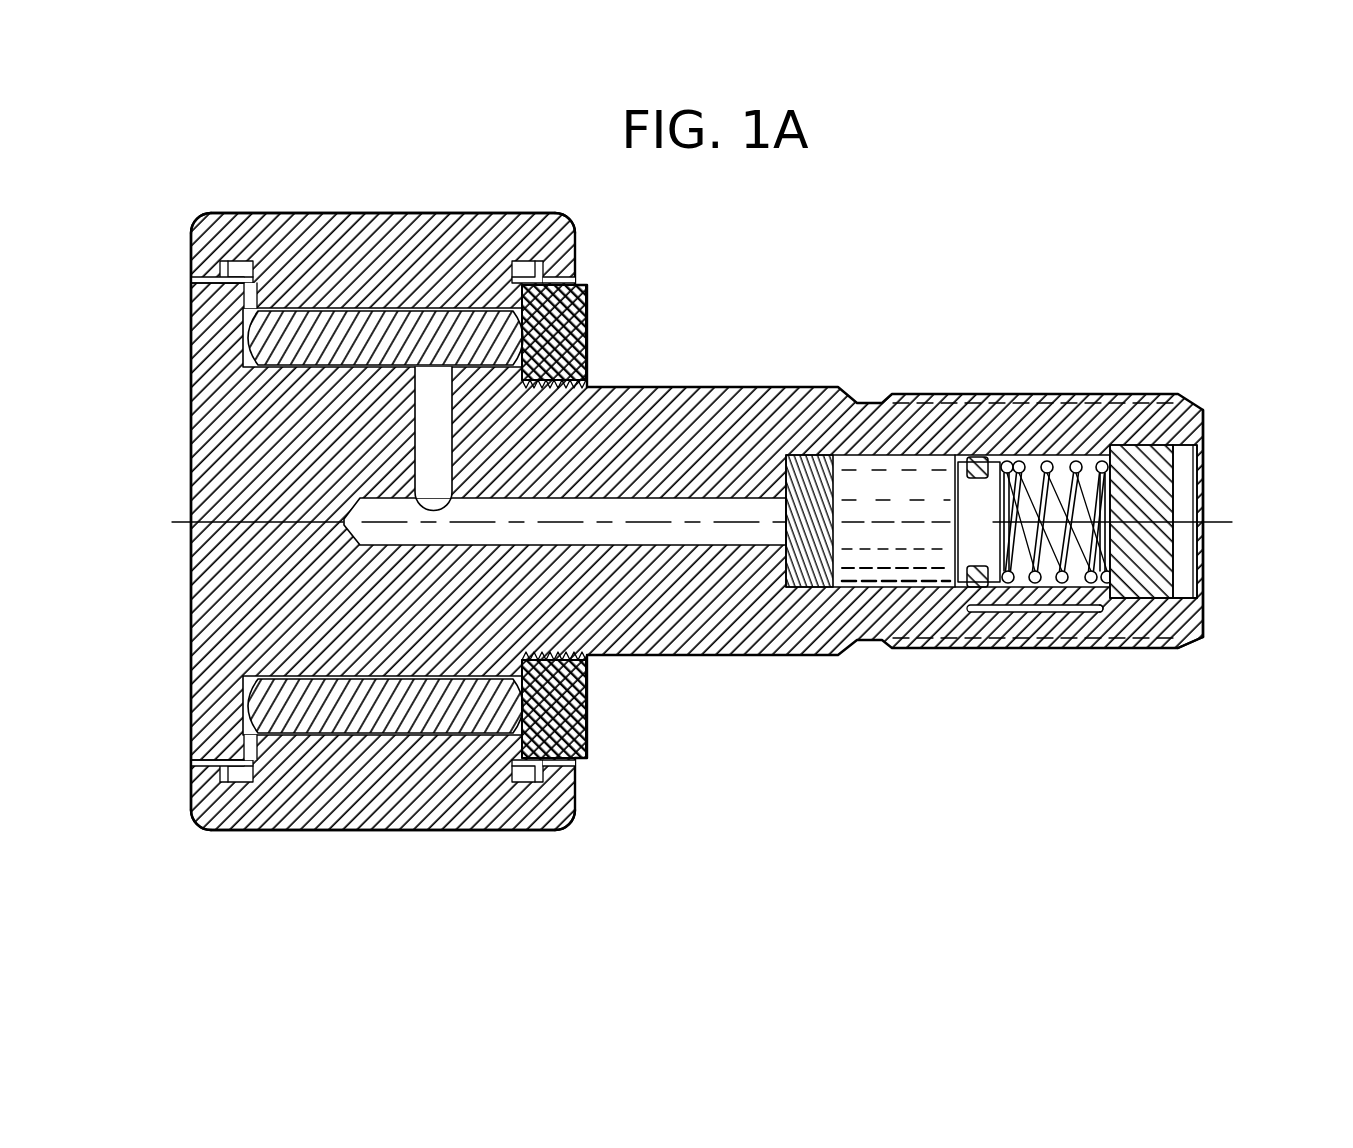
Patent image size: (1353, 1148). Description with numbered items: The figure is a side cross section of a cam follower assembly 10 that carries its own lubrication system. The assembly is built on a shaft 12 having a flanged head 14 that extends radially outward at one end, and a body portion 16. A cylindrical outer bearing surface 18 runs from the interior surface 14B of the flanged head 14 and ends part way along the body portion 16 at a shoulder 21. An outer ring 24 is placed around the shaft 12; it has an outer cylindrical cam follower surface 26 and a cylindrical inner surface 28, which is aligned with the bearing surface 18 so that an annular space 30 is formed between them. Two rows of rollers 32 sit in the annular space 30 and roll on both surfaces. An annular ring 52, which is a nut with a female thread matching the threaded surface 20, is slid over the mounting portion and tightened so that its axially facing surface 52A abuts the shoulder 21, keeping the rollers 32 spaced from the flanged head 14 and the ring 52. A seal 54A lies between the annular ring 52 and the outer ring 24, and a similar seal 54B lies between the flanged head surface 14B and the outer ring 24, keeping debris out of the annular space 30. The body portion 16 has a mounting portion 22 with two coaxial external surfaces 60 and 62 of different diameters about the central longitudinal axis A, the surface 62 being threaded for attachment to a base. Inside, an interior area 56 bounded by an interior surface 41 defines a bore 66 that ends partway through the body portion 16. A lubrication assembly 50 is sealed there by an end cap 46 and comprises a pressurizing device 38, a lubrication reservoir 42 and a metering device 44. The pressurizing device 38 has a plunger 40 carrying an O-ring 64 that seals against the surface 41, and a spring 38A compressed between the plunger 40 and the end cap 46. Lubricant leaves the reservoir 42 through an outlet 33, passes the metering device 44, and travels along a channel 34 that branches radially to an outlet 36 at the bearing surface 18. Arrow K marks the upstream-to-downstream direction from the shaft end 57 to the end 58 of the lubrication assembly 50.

The cam follower assembly 10 is at (845, 261).
The shaft 12 is at (215, 462).
The flanged head 14 is at (200, 340).
The interior surface of the flanged head 14B is at (260, 330).
The body portion 16 is at (1207, 358).
The cylindrical outer bearing surface 18 is at (280, 370).
The threaded surface 20 is at (590, 363).
The shoulder 21 is at (586, 333).
The mounting portion 22 is at (592, 313).
The outer ring 24 is at (250, 222).
The outer cylindrical cam follower surface 26 is at (318, 212).
The cylindrical inner surface 28 is at (357, 312).
The annular space 30 is at (213, 277).
The rollers 32 is at (432, 312).
The outlet 33 is at (783, 532).
The channel 34 is at (427, 418).
The outlet 36 is at (437, 378).
The pressurizing device 38 is at (967, 607).
The spring 38A is at (1057, 588).
The plunger 40 is at (950, 567).
The interior surface 41 is at (1015, 455).
The lubrication reservoir 42 is at (898, 582).
The metering device 44 is at (787, 590).
The end cap 46 is at (1133, 585).
The lubrication assembly 50 is at (1202, 732).
The annular ring 52 is at (586, 298).
The axially facing surface 52A is at (503, 268).
The seal 54A is at (572, 281).
The seal 54B is at (210, 262).
The interior area 56 is at (1072, 446).
The end of the shaft 57 is at (1203, 612).
The end of the lubrication assembly 58 is at (813, 590).
The external surface 60 is at (603, 387).
The external surface 62 is at (1165, 648).
The O-ring 64 is at (982, 453).
The bore 66 is at (1188, 477).
The central longitudinal axis A is at (1232, 521).
The arrow K is at (1160, 252).